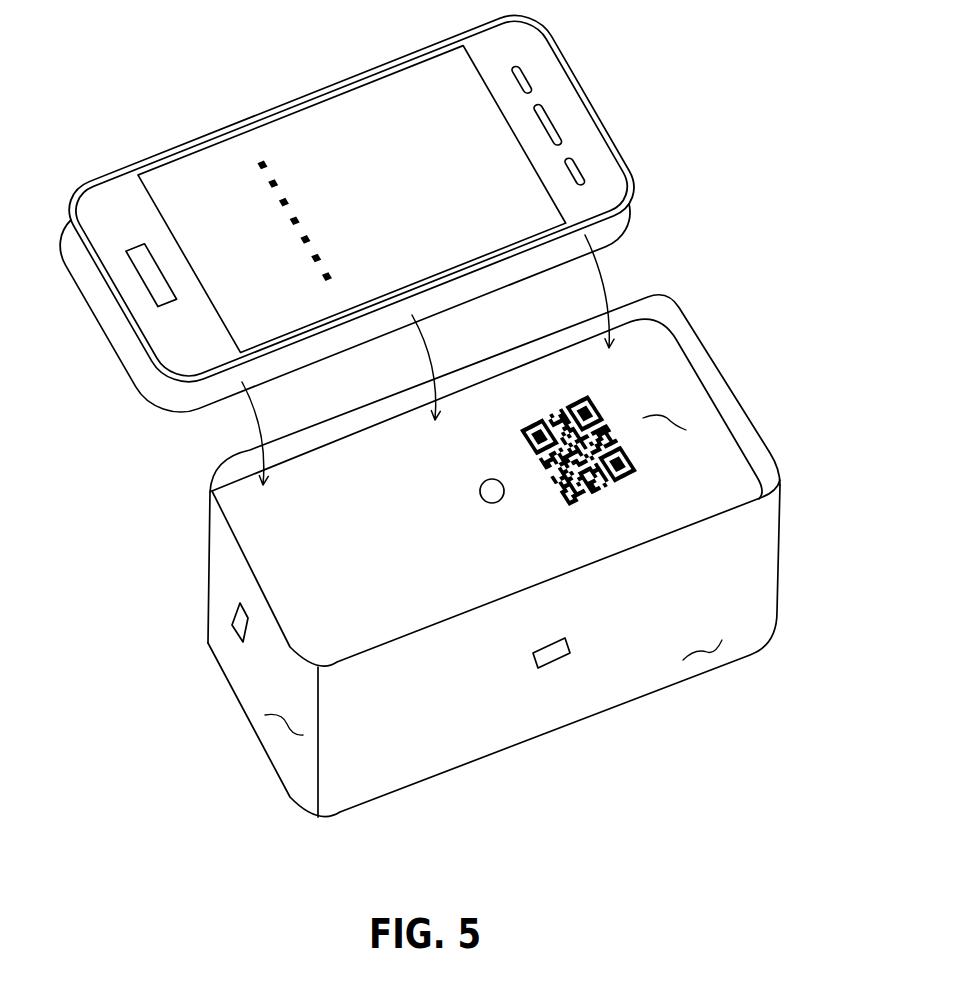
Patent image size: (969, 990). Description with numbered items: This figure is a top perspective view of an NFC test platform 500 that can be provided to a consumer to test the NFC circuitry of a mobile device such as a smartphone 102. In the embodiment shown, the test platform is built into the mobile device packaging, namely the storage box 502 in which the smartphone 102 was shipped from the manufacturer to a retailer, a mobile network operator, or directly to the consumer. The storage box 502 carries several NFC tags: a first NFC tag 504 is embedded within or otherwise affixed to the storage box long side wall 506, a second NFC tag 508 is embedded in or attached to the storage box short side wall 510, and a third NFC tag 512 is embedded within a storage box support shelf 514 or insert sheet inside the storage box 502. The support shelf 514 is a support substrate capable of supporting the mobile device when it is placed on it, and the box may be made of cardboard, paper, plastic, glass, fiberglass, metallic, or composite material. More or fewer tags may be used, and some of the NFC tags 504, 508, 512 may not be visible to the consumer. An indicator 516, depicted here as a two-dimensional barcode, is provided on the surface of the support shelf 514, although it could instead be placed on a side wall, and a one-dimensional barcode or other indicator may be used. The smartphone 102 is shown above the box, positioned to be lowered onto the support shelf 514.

The smartphone 102 is at (279, 81).
The NFC test platform 500 is at (733, 66).
The storage box 502 is at (709, 299).
The first NFC tag 504 is at (562, 655).
The storage box long side wall 506 is at (708, 652).
The second NFC tag 508 is at (233, 625).
The storage box short side wall 510 is at (287, 733).
The third NFC tag 512 is at (480, 492).
The storage box support shelf 514 is at (667, 417).
The indicator 516 is at (652, 476).